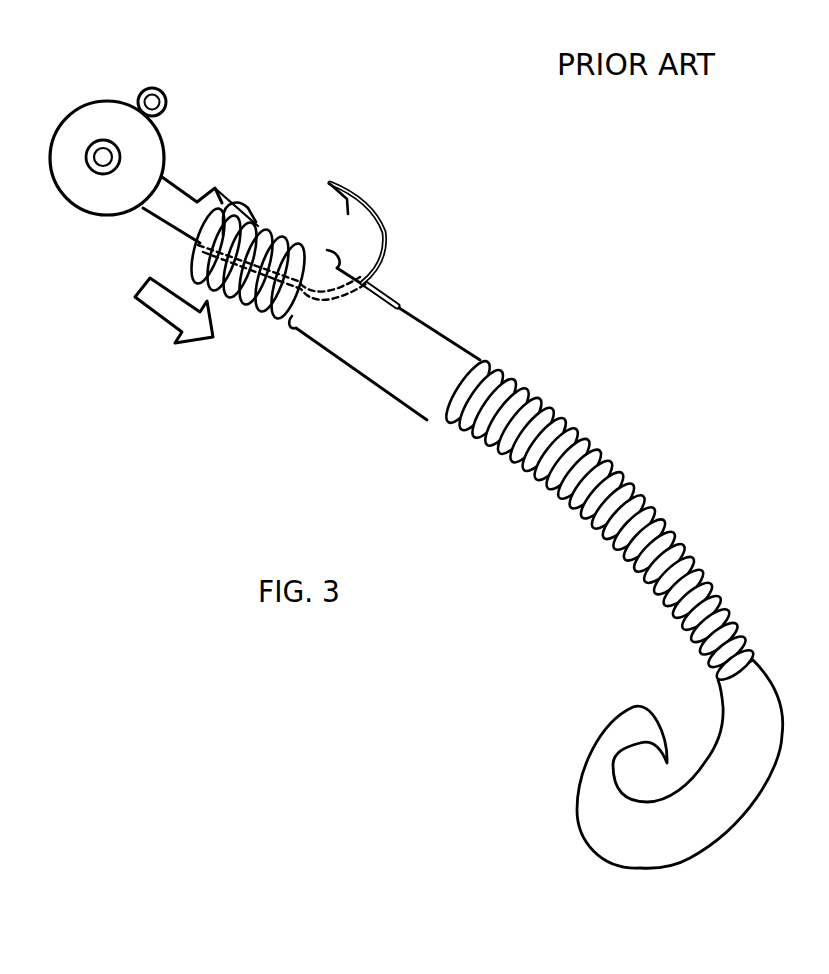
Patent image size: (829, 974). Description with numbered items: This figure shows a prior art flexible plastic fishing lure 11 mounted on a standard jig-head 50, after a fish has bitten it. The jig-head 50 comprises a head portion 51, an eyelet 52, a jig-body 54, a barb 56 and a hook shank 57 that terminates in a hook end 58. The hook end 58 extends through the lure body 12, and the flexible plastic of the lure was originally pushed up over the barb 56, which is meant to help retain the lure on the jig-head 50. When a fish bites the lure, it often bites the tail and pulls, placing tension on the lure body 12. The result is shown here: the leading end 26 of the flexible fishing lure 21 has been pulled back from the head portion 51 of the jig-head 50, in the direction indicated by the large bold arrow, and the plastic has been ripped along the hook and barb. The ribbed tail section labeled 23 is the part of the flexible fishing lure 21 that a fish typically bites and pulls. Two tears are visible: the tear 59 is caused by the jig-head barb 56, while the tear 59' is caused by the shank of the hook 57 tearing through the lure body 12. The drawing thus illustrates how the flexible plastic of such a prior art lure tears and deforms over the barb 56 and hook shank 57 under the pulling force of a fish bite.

The flexible plastic fishing lure 11 is at (484, 500).
The lure body 12 is at (358, 367).
The flexible fishing lure 21 is at (611, 573).
The rib 23 is at (463, 360).
The leading end 26 is at (198, 233).
The jig-head 50 is at (151, 133).
The head portion 51 is at (88, 130).
The eyelet 52 is at (152, 88).
The jig-body 54 is at (175, 187).
The barb 56 is at (328, 227).
The hook shank 57 is at (331, 223).
The hook end 58 is at (328, 182).
The tear 59 is at (260, 194).
The tear 59' is at (417, 282).